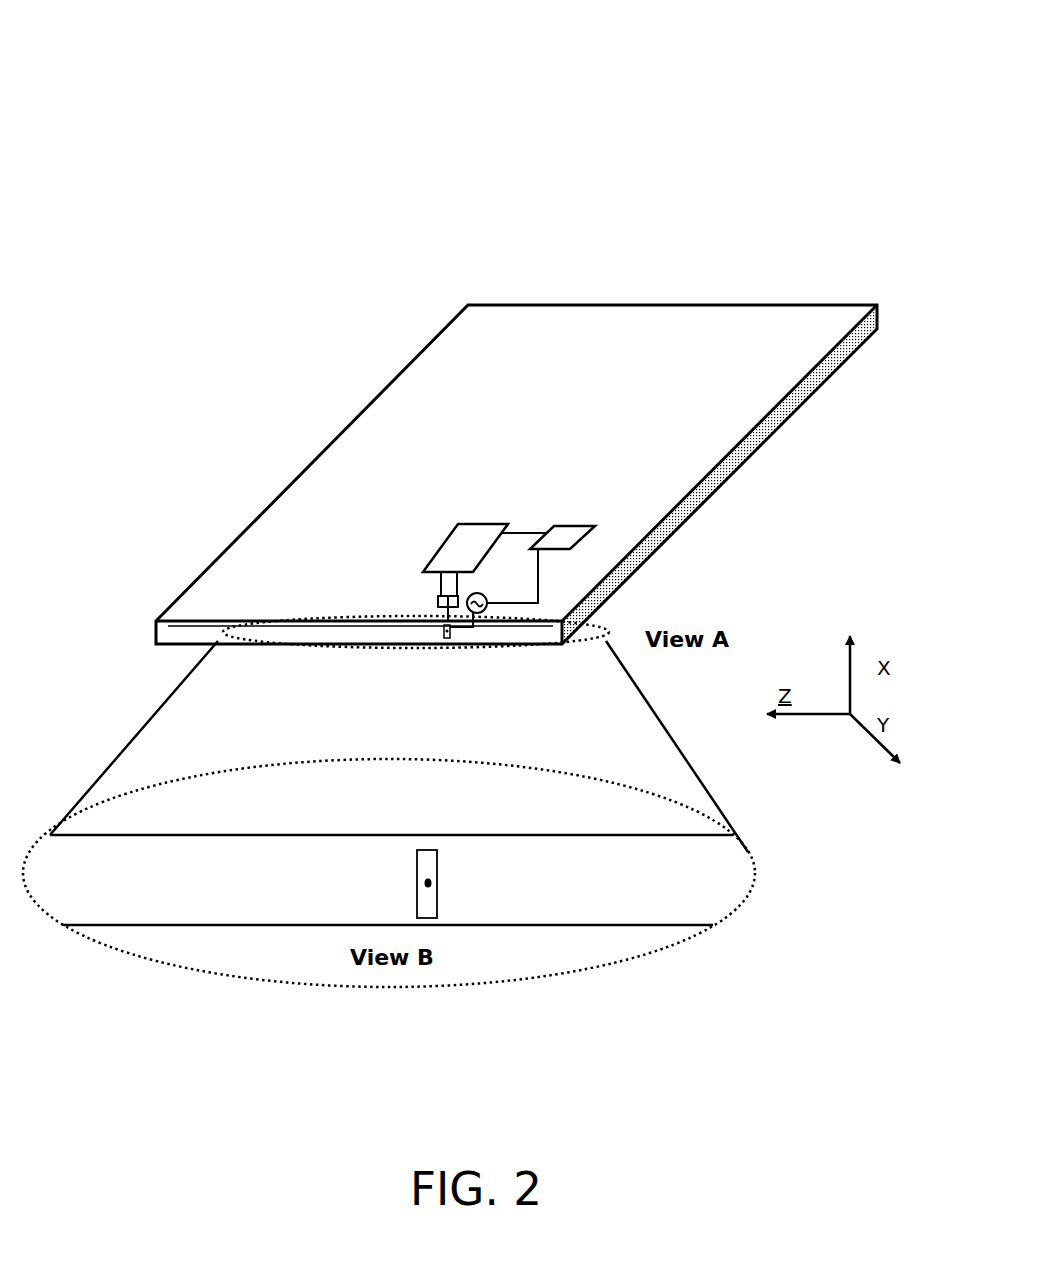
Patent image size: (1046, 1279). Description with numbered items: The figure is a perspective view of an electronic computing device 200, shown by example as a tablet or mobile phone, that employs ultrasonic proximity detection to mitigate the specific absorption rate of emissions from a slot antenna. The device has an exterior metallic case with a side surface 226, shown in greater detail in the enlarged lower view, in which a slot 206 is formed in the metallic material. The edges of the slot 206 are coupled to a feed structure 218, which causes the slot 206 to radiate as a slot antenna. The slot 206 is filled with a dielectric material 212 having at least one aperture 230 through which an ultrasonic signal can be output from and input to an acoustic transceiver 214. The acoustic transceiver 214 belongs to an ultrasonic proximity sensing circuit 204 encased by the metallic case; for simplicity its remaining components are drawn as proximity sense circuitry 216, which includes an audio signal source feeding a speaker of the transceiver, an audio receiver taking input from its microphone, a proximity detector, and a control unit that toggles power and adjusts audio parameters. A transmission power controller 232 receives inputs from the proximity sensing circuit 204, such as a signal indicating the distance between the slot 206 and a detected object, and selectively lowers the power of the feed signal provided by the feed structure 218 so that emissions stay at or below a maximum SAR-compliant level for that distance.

The electronic computing device 200 is at (145, 70).
The ultrasonic proximity sensing circuit 204 is at (413, 582).
The slot 206 is at (447, 636).
The dielectric material 212 is at (430, 867).
The acoustic transceiver 214 is at (437, 600).
The proximity sense circuitry 216 is at (463, 555).
The feed structure 218 is at (484, 612).
The side surface 226 is at (168, 635).
The aperture 230 is at (428, 883).
The transmission power controller 232 is at (569, 526).